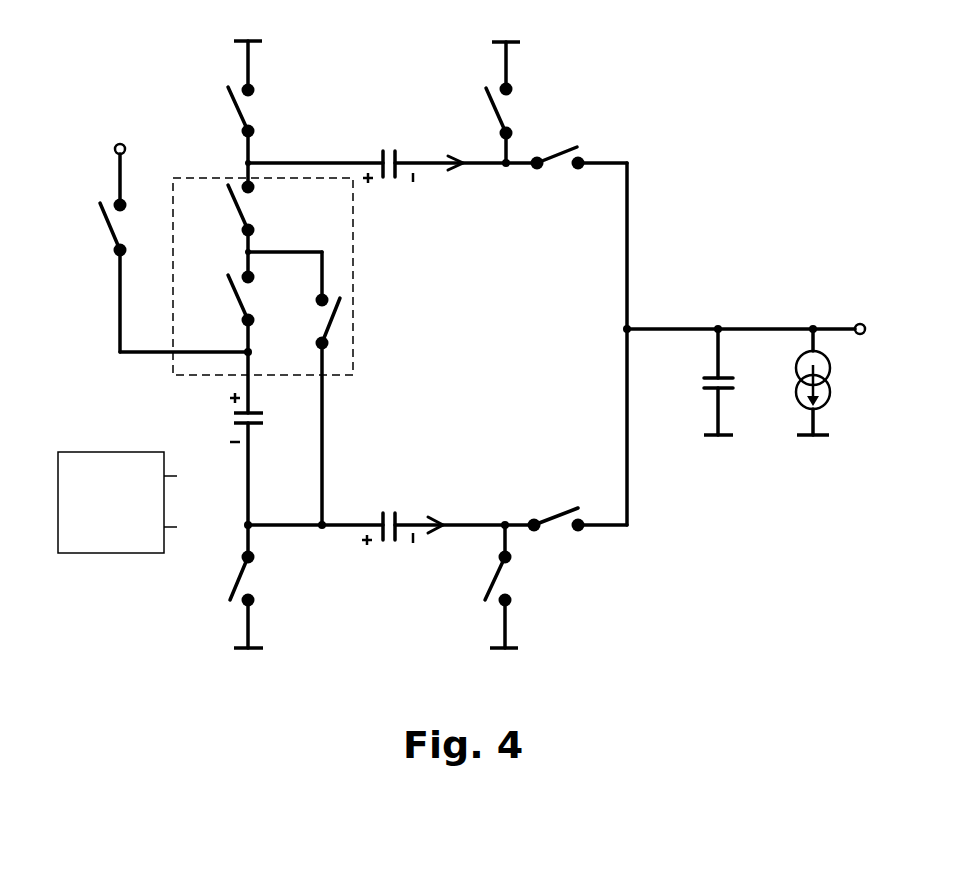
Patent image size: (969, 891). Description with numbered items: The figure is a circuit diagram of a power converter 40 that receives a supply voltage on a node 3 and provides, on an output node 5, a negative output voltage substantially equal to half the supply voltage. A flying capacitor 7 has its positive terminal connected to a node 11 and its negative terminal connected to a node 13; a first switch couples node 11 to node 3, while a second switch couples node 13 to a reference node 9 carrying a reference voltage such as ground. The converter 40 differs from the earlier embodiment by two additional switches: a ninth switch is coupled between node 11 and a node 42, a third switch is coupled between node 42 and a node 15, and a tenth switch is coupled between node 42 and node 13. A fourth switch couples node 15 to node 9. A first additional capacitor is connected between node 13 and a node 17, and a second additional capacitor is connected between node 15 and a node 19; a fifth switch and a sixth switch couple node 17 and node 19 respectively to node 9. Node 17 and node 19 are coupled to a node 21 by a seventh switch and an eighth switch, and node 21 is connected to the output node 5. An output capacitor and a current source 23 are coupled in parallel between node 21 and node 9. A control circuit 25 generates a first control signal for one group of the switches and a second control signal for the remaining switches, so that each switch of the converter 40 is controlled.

The node 3 is at (114, 149).
The output node 5 is at (865, 333).
The capacitor 7 is at (258, 413).
The reference node 9 is at (250, 40).
The node 11 is at (253, 352).
The node 13 is at (251, 522).
The node 15 is at (246, 163).
The node 17 is at (503, 522).
The node 19 is at (506, 170).
The node 21 is at (625, 329).
The current source 23 is at (830, 395).
The control circuit 25 is at (108, 452).
The power converter 40 is at (473, 349).
The node 42 is at (246, 252).